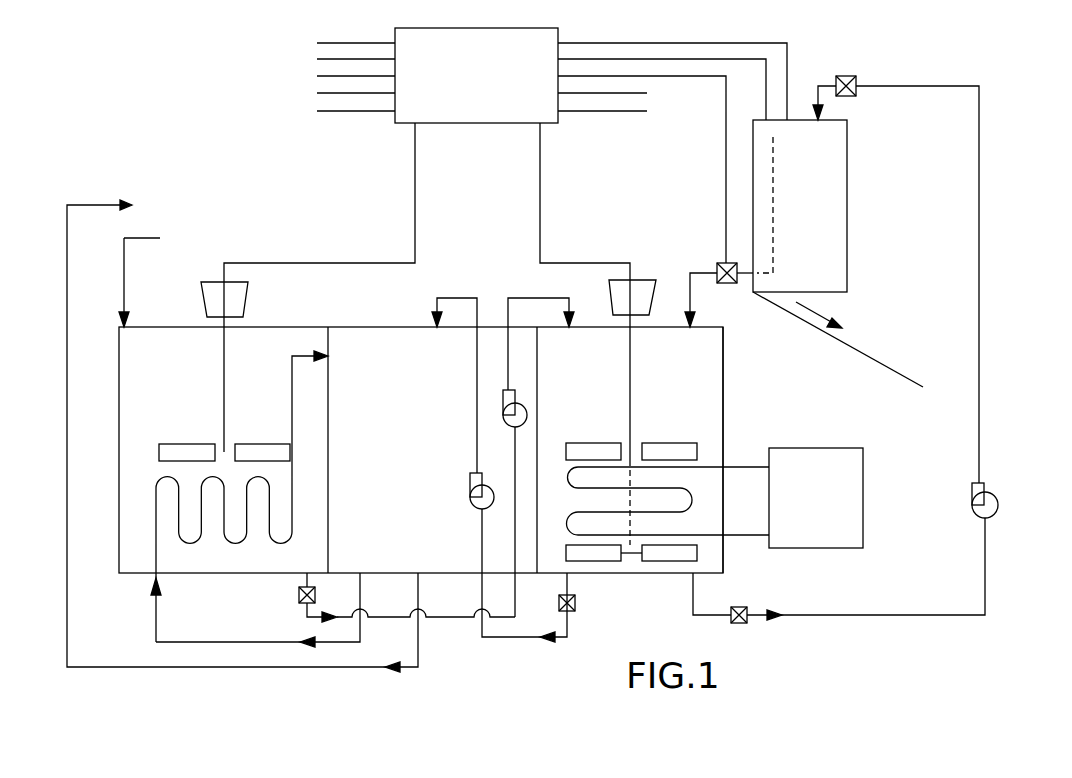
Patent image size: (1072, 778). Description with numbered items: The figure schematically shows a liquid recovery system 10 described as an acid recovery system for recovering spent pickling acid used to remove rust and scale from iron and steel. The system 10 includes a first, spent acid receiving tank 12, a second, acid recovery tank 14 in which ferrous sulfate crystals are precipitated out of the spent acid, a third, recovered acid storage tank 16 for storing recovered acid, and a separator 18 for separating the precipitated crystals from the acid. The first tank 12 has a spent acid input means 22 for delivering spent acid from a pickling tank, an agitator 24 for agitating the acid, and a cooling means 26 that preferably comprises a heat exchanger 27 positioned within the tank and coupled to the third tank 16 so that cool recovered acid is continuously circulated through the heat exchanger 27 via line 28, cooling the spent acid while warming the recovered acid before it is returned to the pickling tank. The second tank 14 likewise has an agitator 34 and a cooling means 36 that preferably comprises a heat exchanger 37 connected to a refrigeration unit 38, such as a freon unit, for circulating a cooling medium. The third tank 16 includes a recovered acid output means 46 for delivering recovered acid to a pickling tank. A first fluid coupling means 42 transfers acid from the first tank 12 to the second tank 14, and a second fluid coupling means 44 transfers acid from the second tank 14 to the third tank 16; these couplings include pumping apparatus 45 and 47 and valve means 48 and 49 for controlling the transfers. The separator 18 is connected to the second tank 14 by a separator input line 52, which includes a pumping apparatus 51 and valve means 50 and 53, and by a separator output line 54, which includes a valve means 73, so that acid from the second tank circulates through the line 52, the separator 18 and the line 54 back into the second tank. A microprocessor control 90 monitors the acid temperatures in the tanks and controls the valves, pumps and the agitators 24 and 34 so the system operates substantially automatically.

The liquid recovery system 10 is at (125, 103).
The first, spent acid receiving tank 12 is at (118, 387).
The second, acid recovery tank 14 is at (724, 405).
The third, recovered acid storage tank 16 is at (372, 326).
The separator 18 is at (848, 200).
The spent acid input means 22 is at (122, 297).
The agitator 24 is at (224, 393).
The cooling means 26 is at (143, 512).
The heat exchanger 27 is at (225, 537).
The line 28 is at (200, 642).
The agitator 34 is at (628, 380).
The cooling means 36 is at (738, 450).
The heat exchanger 37 is at (592, 512).
The refrigeration unit 38 is at (866, 508).
The first fluid coupling means 42 is at (446, 620).
The second fluid coupling means 44 is at (513, 640).
The pumping apparatus 45 is at (527, 415).
The recovered acid output means 46 is at (268, 669).
The pumping apparatus 47 is at (468, 483).
The valve means 48 is at (299, 595).
The valve means 49 is at (576, 603).
The valve means 50 is at (740, 607).
The pumping apparatus 51 is at (998, 507).
The separator input line 52 is at (992, 587).
The valve means 53 is at (845, 75).
The separator output line 54 is at (690, 262).
The valve means 73 is at (717, 262).
The microprocessor control 90 is at (478, 123).